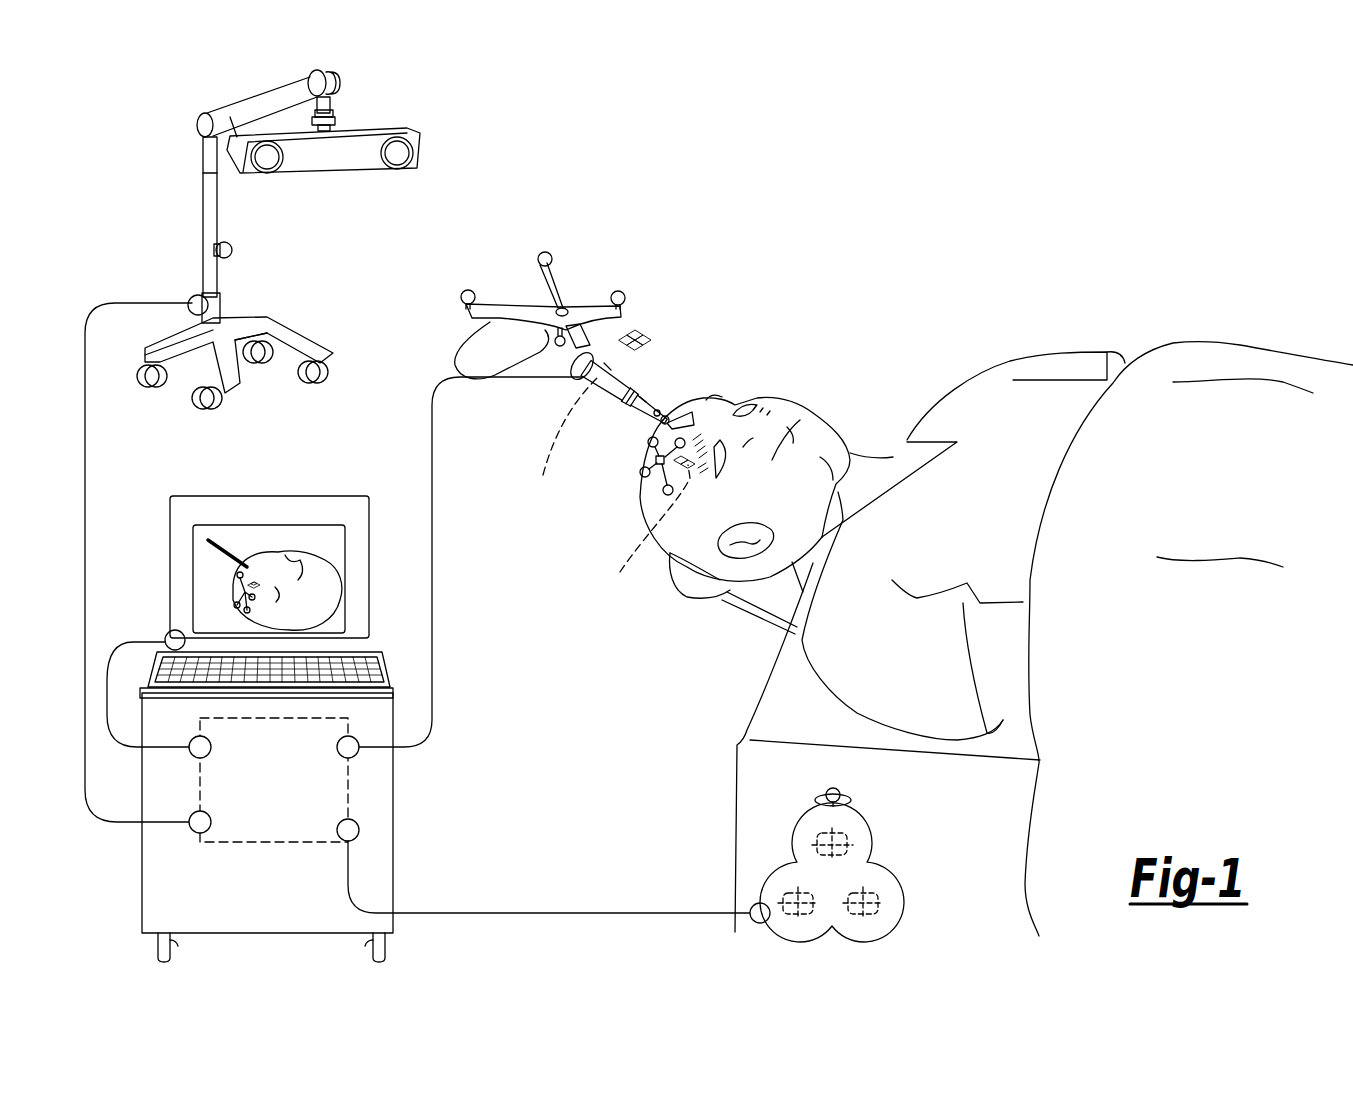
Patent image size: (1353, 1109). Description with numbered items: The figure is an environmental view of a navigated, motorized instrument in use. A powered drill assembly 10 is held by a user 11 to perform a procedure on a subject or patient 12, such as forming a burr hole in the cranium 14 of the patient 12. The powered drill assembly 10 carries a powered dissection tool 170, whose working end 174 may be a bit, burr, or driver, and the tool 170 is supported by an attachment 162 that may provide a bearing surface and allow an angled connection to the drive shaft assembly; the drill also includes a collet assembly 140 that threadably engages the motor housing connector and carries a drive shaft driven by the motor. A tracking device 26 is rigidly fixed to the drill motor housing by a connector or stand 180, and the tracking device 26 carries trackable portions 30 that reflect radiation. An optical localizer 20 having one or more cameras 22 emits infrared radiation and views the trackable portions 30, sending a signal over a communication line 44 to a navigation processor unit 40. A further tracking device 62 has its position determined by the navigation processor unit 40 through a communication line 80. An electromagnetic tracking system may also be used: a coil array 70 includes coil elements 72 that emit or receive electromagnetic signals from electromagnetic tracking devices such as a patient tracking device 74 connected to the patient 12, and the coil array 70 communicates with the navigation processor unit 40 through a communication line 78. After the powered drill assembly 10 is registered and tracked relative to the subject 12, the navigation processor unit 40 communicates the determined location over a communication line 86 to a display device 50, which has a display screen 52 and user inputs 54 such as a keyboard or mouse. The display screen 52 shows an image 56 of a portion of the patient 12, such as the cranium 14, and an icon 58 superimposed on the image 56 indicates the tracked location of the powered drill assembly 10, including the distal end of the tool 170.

The powered drill assembly 10 is at (638, 360).
The user 11 is at (492, 304).
The subject 12 is at (840, 403).
The cranium 14 is at (665, 420).
The optical localizer 20 is at (367, 125).
The cameras 22 is at (270, 158).
The tracking device 26 is at (552, 262).
The trackable portions 30 is at (620, 290).
The navigation processor unit 40 is at (263, 842).
The communication line 44 is at (85, 455).
The display device 50 is at (248, 503).
The display screen 52 is at (217, 573).
The user inputs 54 is at (365, 673).
The image 56 is at (303, 557).
The icon 58 is at (220, 548).
The tracking device 62 is at (640, 462).
The coil array 70 is at (865, 908).
The coil elements 72 is at (773, 860).
The patient tracking device 74 is at (648, 534).
The communication line 78 is at (497, 912).
The communication line 80 is at (432, 549).
The communication line 86 is at (107, 652).
The collet assembly 140 is at (564, 441).
The attachment 162 is at (653, 401).
The powered dissection tool 170 is at (666, 420).
The working end 174 is at (733, 397).
The connector 180 is at (631, 335).